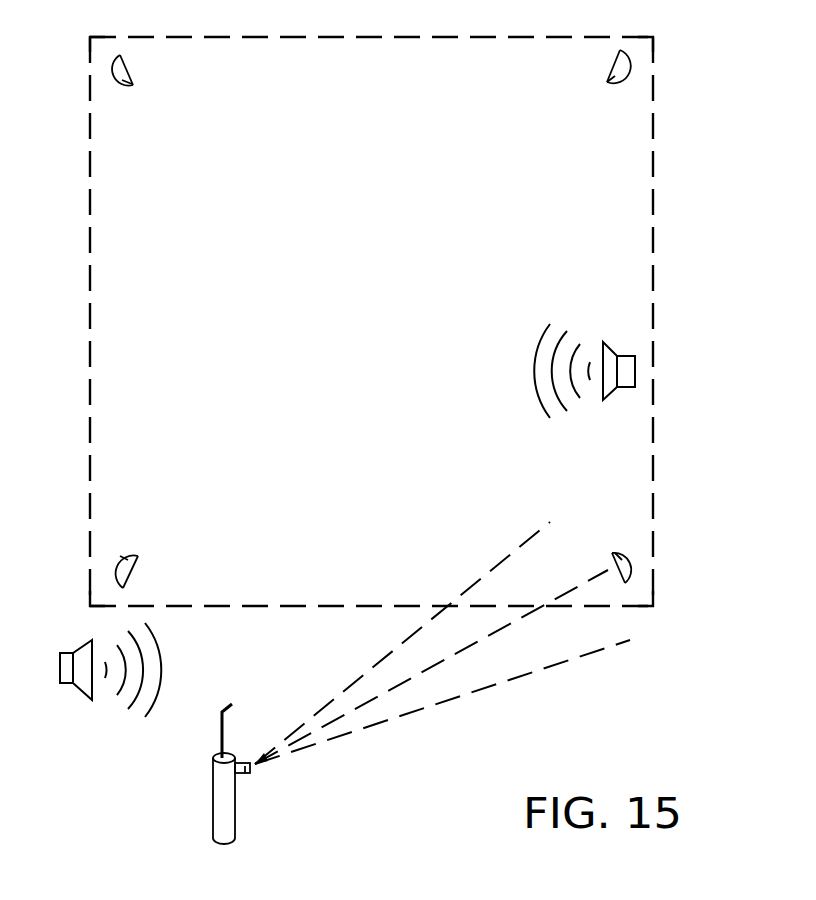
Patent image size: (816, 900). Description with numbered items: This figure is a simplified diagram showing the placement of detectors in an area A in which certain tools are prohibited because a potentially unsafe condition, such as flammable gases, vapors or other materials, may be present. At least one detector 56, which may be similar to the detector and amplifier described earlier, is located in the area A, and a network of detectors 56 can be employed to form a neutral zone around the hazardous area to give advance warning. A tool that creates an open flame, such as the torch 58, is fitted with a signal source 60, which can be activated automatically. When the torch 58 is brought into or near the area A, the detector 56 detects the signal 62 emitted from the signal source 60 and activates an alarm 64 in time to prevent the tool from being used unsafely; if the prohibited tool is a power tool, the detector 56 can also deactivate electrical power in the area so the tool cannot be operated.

The area A is at (624, 188).
The detector 56 is at (133, 85).
The torch 58 is at (222, 790).
The signal source 60 is at (243, 775).
The signal 62 is at (480, 731).
The alarm 64 is at (630, 367).